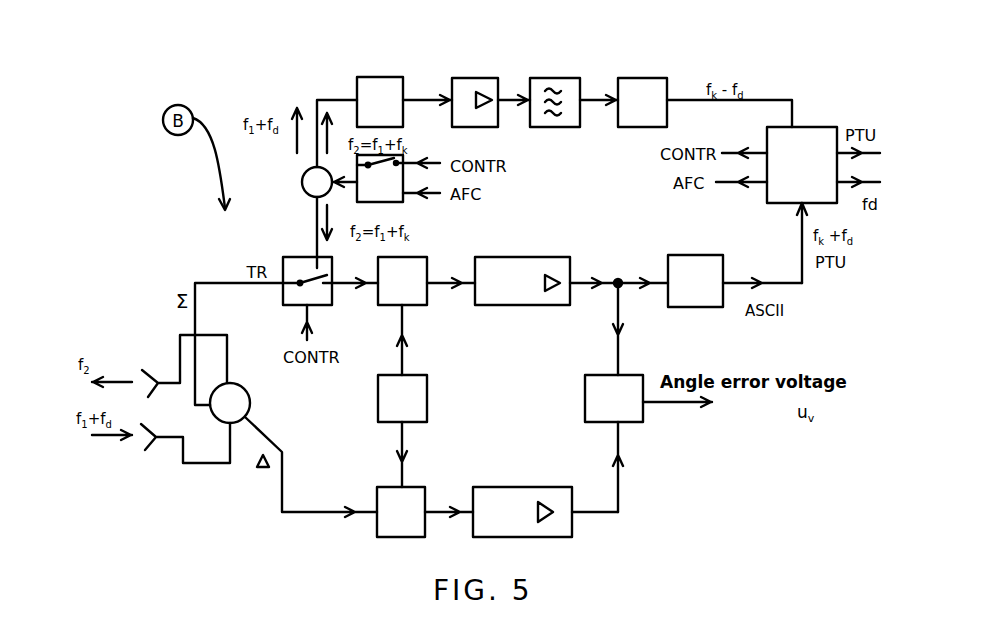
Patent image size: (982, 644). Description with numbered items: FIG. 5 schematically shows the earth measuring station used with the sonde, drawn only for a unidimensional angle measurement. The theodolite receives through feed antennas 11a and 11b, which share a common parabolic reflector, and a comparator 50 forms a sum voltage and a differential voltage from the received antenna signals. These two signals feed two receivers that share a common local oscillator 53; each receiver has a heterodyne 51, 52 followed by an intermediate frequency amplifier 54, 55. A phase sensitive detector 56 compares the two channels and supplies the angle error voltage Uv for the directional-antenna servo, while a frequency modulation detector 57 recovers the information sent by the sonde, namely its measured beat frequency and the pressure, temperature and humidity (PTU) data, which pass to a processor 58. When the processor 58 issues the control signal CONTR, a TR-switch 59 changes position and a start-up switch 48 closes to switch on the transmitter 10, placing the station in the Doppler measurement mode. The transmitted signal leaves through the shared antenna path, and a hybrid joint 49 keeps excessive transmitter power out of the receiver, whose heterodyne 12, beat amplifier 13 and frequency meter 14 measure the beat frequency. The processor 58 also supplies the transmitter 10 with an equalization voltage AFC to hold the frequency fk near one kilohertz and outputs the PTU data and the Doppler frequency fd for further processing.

The transmitter 10 is at (393, 190).
The heterodyne 12 is at (380, 77).
The beat amplifier 13 is at (470, 78).
The frequency meter 14 is at (641, 78).
The start-up switch 48 is at (398, 160).
The hybrid joint 49 is at (302, 186).
The comparator 50 is at (250, 400).
The heterodyne 51 is at (413, 497).
The heterodyne 52 is at (420, 296).
The local oscillator 53 is at (427, 396).
The intermediate frequency amplifier 54 is at (520, 490).
The intermediate frequency amplifier 55 is at (535, 305).
The phase sensitive detector 56 is at (637, 413).
The frequency modulation detector 57 is at (695, 307).
The processor 58 is at (802, 165).
The transmit-receive switch 59 is at (328, 297).
The feed antenna 11a is at (152, 390).
The feed antenna 11b is at (148, 447).